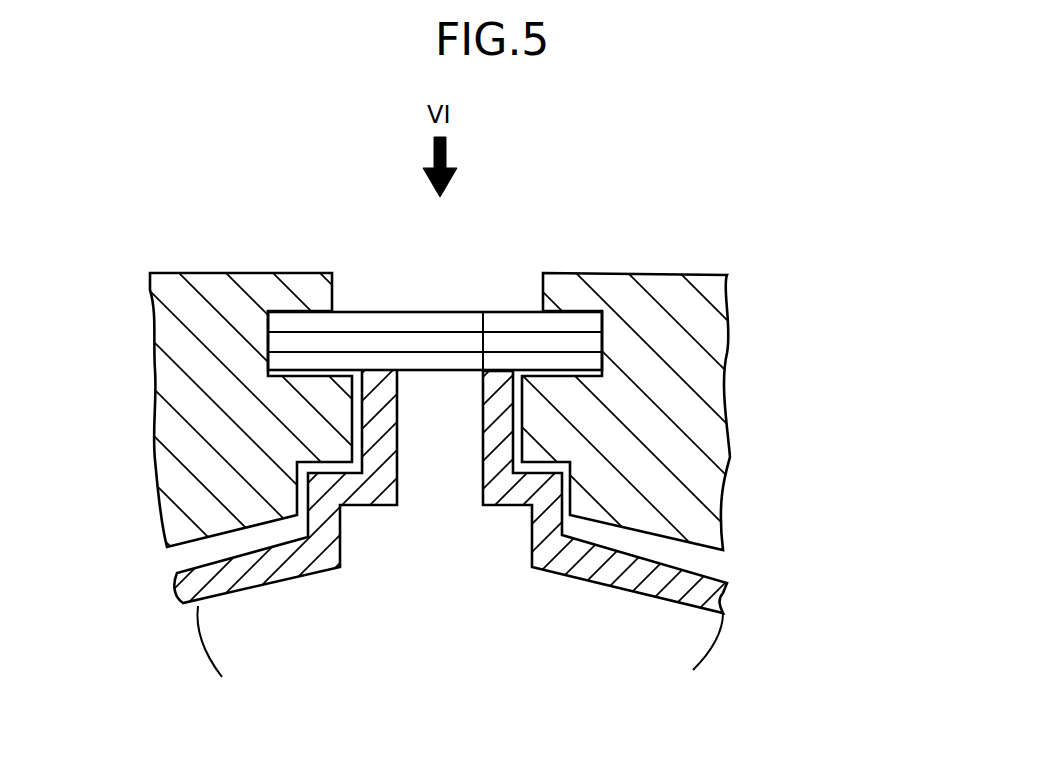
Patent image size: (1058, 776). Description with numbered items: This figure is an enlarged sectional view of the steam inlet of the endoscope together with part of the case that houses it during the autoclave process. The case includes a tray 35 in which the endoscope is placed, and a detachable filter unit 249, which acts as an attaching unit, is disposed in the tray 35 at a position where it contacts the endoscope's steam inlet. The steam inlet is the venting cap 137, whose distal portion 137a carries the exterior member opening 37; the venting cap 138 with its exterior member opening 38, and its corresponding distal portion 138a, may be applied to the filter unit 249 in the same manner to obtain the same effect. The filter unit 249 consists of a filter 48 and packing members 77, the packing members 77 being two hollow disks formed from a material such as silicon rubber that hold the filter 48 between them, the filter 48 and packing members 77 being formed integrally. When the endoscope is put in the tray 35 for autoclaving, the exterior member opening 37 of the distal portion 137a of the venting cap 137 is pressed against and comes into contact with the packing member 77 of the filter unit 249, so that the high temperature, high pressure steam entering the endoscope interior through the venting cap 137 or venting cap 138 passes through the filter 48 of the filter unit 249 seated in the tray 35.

The tray 35 is at (208, 323).
The filter unit 249 is at (435, 293).
The packing members 77 is at (545, 263).
The filter 48 is at (441, 346).
The exterior member opening 37 is at (412, 432).
The exterior member opening 38 is at (316, 523).
The venting cap 137 is at (603, 520).
The venting cap 138 is at (603, 520).
The distal portion 137a is at (492, 385).
The top face of right member (alternate) 138a is at (705, 388).